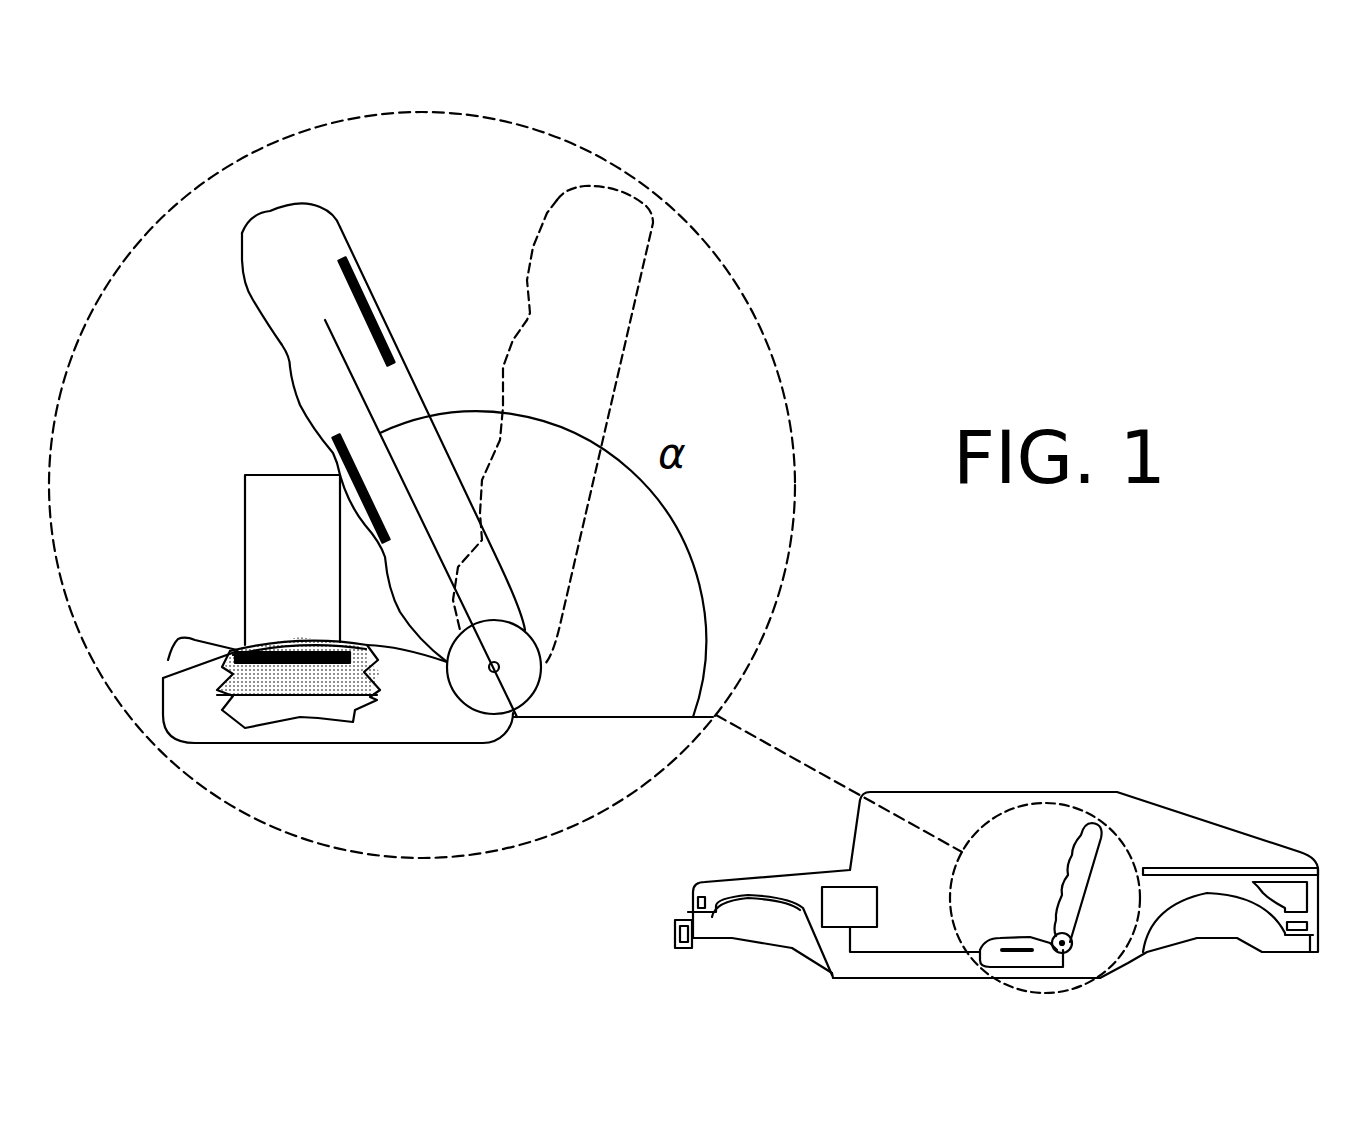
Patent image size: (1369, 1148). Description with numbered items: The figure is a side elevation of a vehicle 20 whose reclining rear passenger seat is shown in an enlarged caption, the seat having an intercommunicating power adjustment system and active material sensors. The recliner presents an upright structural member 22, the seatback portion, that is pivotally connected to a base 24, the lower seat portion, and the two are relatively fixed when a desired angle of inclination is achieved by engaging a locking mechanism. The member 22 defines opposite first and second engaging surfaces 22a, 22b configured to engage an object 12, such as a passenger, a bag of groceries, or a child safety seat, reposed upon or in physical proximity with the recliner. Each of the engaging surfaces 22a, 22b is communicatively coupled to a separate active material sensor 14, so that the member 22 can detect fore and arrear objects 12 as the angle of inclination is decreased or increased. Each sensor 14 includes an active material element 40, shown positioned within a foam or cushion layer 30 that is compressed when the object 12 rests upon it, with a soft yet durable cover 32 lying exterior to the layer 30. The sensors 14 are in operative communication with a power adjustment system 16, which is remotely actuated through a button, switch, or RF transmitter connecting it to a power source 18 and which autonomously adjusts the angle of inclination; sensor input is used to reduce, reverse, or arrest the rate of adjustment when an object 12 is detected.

The object 12 is at (318, 573).
The active material sensor 14 is at (392, 316).
The power adjustment system 16 is at (1063, 943).
The power source 18 is at (850, 887).
The vehicle 20 is at (1030, 792).
The upright structural member 22 is at (318, 285).
The first engaging surface 22a is at (247, 293).
The second engaging surface 22b is at (427, 243).
The base 24 is at (437, 712).
The foam or cushion layer 30 is at (275, 687).
The cover 32 is at (228, 653).
The active material element 40 is at (168, 660).